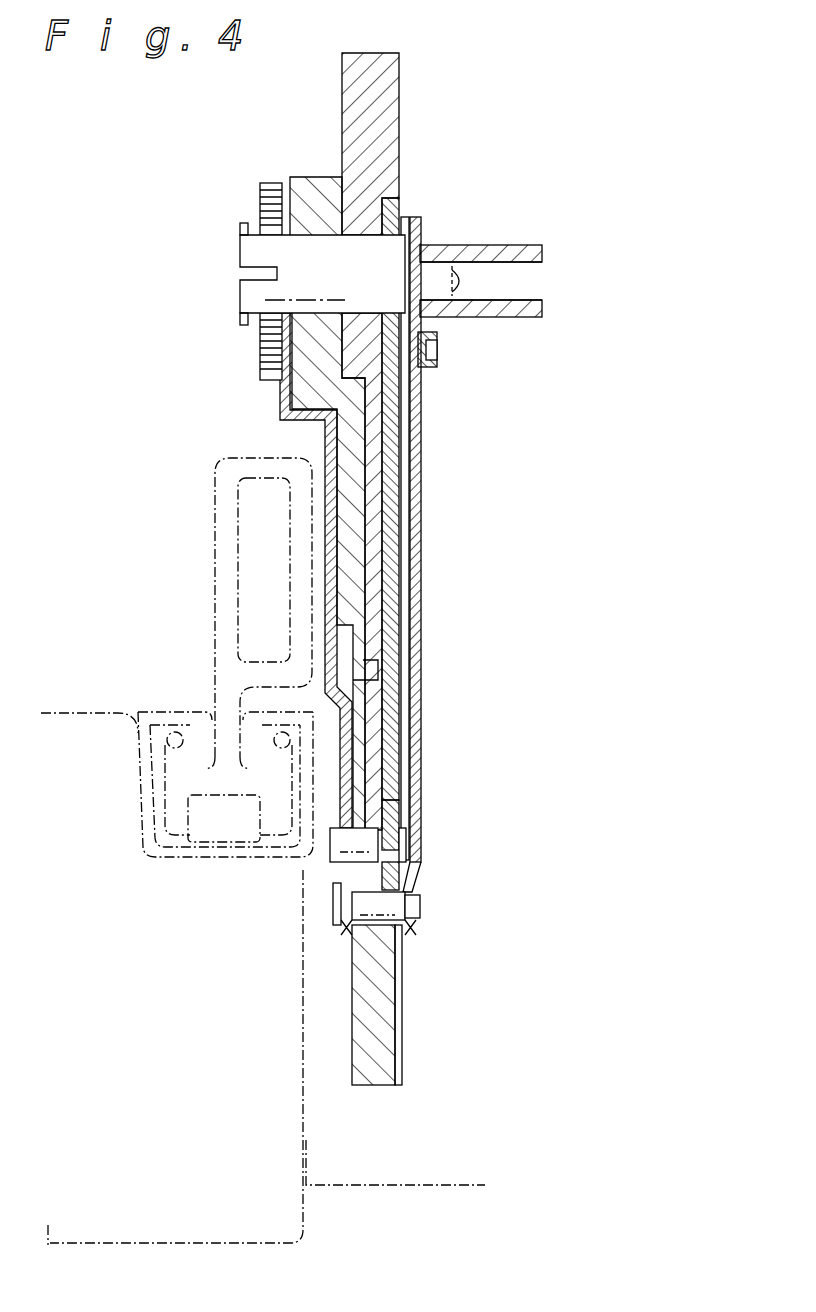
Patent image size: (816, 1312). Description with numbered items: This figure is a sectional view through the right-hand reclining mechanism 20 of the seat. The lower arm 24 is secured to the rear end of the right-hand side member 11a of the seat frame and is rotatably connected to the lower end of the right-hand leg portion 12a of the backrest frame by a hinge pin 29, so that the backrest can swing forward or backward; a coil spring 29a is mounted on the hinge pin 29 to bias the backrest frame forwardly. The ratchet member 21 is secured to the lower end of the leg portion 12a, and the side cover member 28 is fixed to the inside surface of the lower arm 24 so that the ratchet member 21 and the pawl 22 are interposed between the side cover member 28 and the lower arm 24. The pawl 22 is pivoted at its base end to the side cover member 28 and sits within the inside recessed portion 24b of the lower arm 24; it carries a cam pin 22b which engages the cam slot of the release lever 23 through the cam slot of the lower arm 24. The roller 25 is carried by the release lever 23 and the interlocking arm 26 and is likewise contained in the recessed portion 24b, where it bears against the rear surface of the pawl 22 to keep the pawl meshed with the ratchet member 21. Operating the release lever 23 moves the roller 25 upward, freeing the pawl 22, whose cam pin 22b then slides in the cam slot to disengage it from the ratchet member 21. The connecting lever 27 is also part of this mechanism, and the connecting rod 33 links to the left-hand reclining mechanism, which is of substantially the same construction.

The right-hand side member 11a is at (213, 578).
The right-hand leg portion 12a is at (393, 112).
The right-hand reclining mechanism 20 is at (221, 411).
The ratchet member 21 is at (400, 649).
The pawl 22 is at (400, 813).
The cam pin 22b is at (343, 848).
The release lever 23 is at (324, 497).
The lower arm 24 is at (300, 176).
The inside recessed portion 24b is at (380, 925).
The roller 25 is at (403, 931).
The interlocking arm 26 is at (425, 471).
The connecting lever 27 is at (441, 350).
The side cover member 28 is at (410, 566).
The hinge pin 29 is at (239, 244).
The coil spring 29a is at (261, 182).
The connecting rod 33 is at (491, 243).